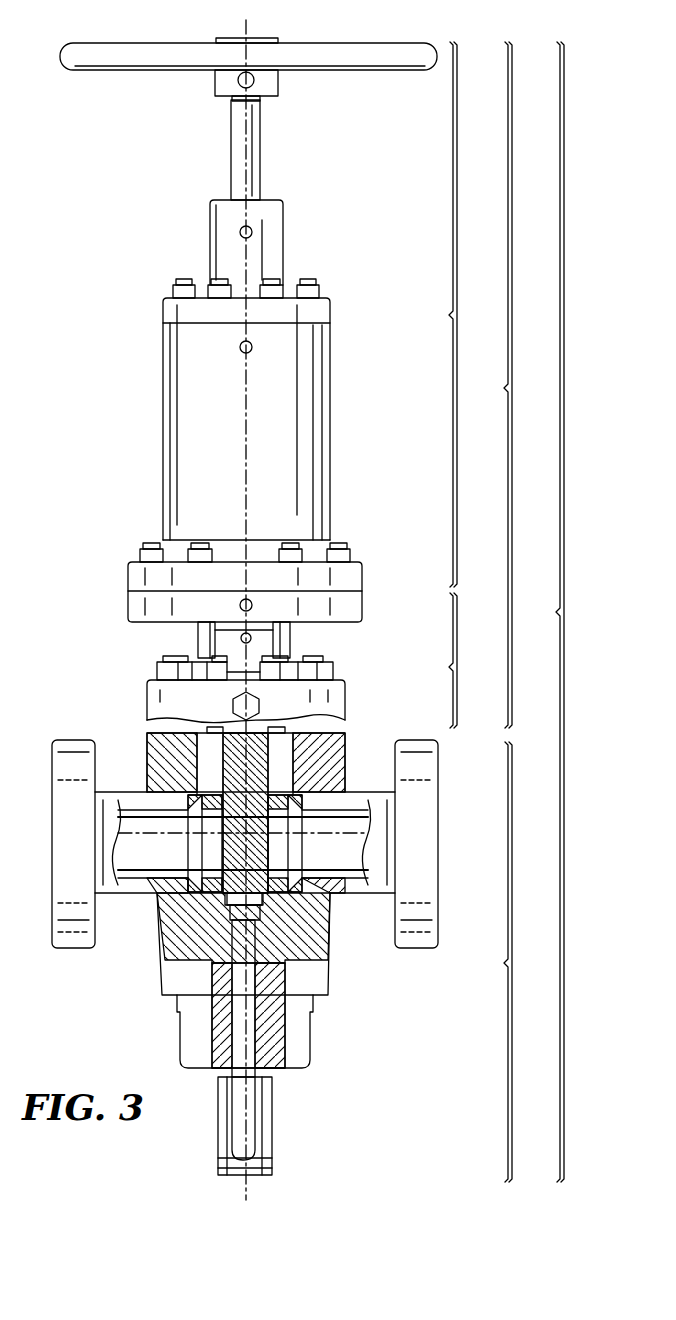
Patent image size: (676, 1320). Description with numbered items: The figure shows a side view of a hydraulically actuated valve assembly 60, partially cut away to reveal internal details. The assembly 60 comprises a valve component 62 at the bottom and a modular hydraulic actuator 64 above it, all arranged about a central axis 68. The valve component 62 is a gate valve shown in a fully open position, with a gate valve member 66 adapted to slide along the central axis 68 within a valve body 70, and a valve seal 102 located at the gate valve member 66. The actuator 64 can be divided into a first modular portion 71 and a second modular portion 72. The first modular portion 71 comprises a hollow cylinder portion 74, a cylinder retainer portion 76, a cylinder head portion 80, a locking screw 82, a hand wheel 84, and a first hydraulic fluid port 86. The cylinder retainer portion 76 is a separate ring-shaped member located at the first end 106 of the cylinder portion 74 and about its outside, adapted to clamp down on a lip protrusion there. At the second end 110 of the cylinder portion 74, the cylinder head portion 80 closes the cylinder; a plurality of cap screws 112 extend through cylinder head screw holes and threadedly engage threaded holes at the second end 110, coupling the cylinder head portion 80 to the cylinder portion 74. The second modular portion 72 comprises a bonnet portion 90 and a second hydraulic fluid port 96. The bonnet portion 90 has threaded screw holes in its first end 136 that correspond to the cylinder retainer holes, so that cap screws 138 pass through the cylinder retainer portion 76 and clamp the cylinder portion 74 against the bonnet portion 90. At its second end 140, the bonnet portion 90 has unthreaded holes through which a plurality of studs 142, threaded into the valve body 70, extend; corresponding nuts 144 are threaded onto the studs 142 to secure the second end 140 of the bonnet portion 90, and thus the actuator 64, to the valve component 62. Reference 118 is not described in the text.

The hydraulically actuated valve assembly 60 is at (578, 612).
The valve component 62 is at (525, 962).
The modular hydraulic actuator 64 is at (525, 385).
The gate valve member 66 is at (203, 761).
The central axis 68 is at (244, 32).
The valve body 70 is at (160, 946).
The first modular portion 71 is at (470, 314).
The second modular portion 72 is at (470, 660).
The hollow cylinder portion 74 is at (170, 432).
The cylinder retainer portion 76 is at (127, 575).
The cylinder head portion 80 is at (210, 236).
The locking screw 82 is at (262, 150).
The hand wheel 84 is at (392, 45).
The first hydraulic fluid port 86 is at (239, 347).
The bonnet portion 90 is at (289, 644).
The second hydraulic fluid port 96 is at (253, 605).
The valve seal 102 is at (203, 800).
The first end of cylinder portion 106 is at (338, 520).
The second end of cylinder portion 110 is at (338, 368).
The cap screws 112 is at (304, 278).
The stem connection 118 is at (216, 106).
The first end of bonnet portion 136 is at (122, 602).
The cap screws 138 is at (148, 545).
The second end of bonnet portion 140 is at (140, 708).
The studs 142 is at (170, 656).
The nuts 144 is at (156, 667).